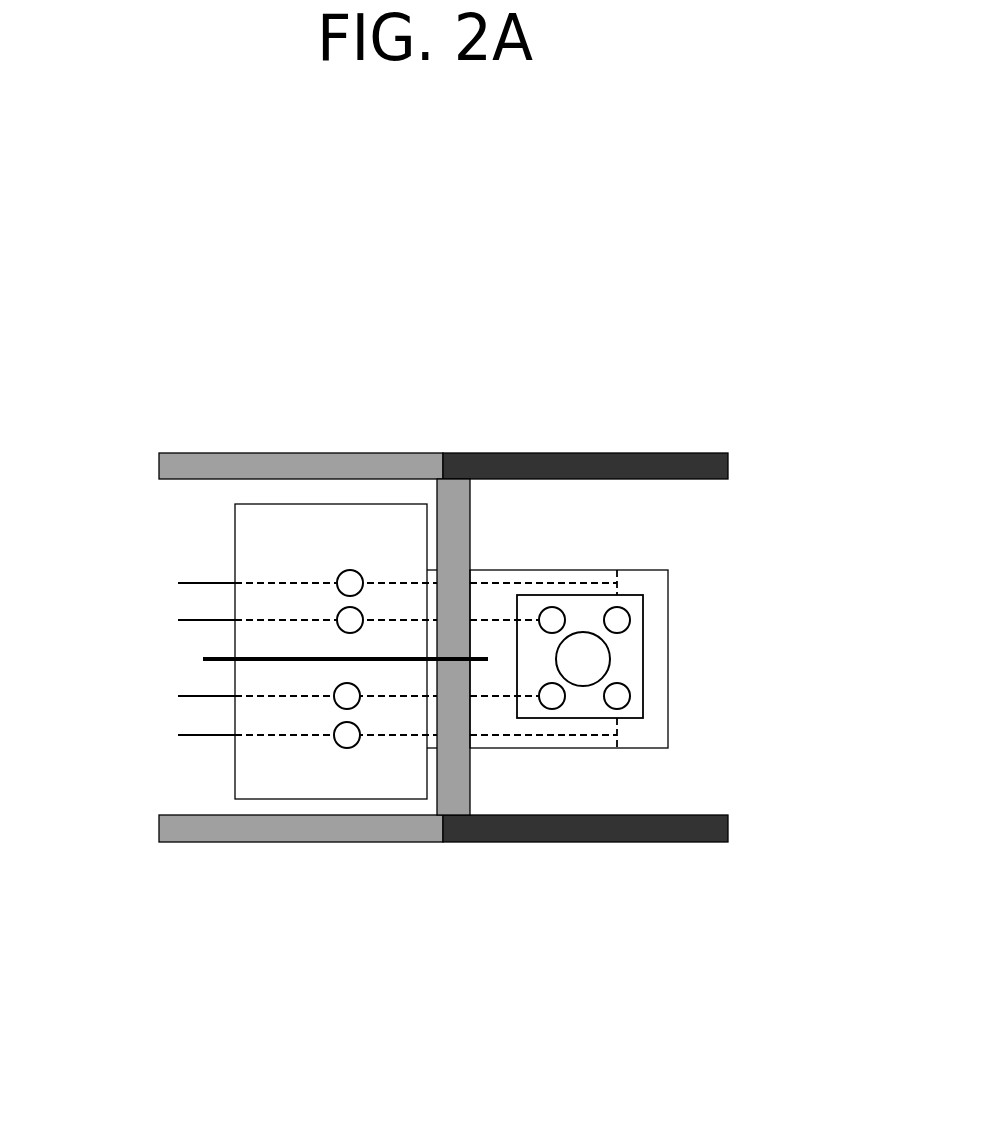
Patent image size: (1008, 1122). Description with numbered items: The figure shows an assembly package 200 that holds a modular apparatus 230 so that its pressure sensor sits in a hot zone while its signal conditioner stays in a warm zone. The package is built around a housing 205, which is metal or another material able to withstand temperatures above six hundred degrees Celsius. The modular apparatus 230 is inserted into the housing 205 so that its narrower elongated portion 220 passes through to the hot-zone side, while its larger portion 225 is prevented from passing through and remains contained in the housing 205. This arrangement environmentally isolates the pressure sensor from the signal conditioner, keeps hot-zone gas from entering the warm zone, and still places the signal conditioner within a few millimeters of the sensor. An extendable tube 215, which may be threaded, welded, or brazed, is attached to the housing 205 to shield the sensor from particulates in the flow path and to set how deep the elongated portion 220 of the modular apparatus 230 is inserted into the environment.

The assembly package 200 is at (771, 228).
The housing 205 is at (286, 446).
The extendable tube 215 is at (556, 850).
The elongated portion 220 is at (677, 667).
The larger portion 225 is at (322, 810).
The modular apparatus 230 is at (185, 524).